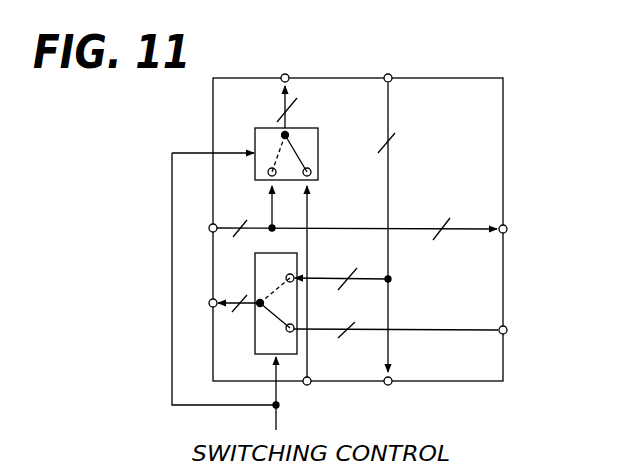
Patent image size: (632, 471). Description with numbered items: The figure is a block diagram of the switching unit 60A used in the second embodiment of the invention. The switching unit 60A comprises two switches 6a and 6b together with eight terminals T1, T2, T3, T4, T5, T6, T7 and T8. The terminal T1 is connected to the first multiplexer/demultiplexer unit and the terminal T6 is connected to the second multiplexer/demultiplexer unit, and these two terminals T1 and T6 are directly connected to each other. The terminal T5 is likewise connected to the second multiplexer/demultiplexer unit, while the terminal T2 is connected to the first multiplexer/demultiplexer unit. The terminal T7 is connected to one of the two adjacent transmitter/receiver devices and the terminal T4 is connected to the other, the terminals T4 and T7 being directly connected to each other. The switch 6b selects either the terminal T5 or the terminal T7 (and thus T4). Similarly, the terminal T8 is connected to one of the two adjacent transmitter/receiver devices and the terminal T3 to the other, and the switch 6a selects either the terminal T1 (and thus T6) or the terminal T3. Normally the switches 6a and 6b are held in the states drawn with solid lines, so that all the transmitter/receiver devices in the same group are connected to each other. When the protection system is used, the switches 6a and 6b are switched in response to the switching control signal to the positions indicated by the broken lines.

The switching unit 60A is at (503, 147).
The switch 6a is at (318, 158).
The switch 6b is at (255, 324).
The terminal T1 is at (197, 229).
The terminal T2 is at (197, 306).
The terminal T3 is at (315, 398).
The terminal T4 is at (387, 398).
The terminal T5 is at (517, 331).
The terminal T6 is at (517, 230).
The terminal T7 is at (385, 63).
The terminal T8 is at (282, 63).